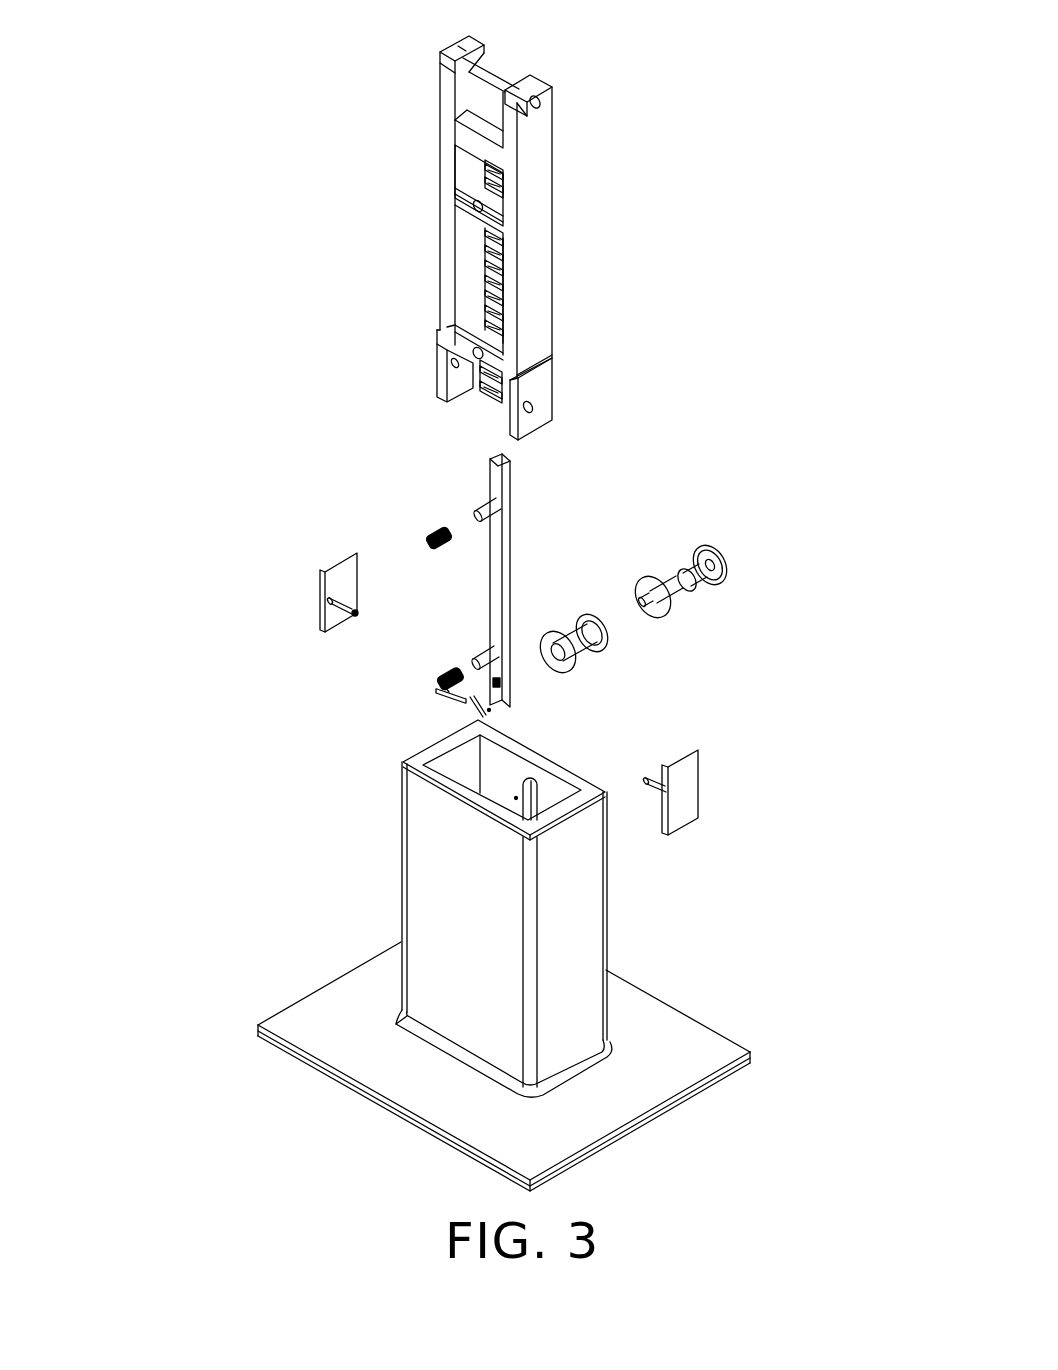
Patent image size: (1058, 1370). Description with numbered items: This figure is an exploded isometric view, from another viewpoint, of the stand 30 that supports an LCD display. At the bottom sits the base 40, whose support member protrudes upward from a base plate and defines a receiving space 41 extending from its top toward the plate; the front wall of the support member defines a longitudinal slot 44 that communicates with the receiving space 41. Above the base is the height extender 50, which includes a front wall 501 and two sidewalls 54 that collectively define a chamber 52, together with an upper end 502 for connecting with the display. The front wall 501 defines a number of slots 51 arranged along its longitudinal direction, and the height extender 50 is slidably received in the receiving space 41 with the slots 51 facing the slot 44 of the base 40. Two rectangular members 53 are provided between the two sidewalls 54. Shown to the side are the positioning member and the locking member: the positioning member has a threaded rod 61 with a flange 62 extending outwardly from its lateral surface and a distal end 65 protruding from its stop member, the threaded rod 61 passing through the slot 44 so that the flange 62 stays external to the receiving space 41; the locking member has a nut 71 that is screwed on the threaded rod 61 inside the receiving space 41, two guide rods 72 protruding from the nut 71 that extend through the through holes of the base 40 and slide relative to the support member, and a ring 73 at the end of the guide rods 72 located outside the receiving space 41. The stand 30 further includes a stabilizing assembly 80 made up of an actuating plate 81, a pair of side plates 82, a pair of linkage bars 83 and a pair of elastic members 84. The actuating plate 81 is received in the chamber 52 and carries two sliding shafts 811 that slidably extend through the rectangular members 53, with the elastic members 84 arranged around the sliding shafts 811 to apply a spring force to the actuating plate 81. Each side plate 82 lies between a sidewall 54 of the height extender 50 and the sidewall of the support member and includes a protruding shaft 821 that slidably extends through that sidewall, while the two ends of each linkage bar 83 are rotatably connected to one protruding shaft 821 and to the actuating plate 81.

The stand 30 is at (298, 118).
The base 40 is at (369, 851).
The receiving space 41 is at (500, 775).
The longitudinal slot 44 is at (530, 800).
The height extender 50 is at (576, 248).
The front wall 501 is at (497, 96).
The upper end 502 is at (457, 43).
The slots 51 is at (482, 282).
The chamber 52 is at (468, 250).
The rectangular members 53 is at (463, 195).
The sidewalls 54 is at (543, 403).
The threaded rod 61 is at (680, 587).
The flange 62 is at (682, 567).
The distal end 65 is at (653, 613).
The nut 71 is at (543, 640).
The guide rods 72 is at (588, 650).
The ring 73 is at (590, 613).
The stabilizing assembly 80 is at (362, 476).
The actuating plate 81 is at (495, 482).
The sliding shafts 811 is at (482, 505).
The side plates 82 is at (337, 569).
The protruding shaft 821 is at (340, 601).
The linkage bars 83 is at (443, 697).
The elastic members 84 is at (428, 545).